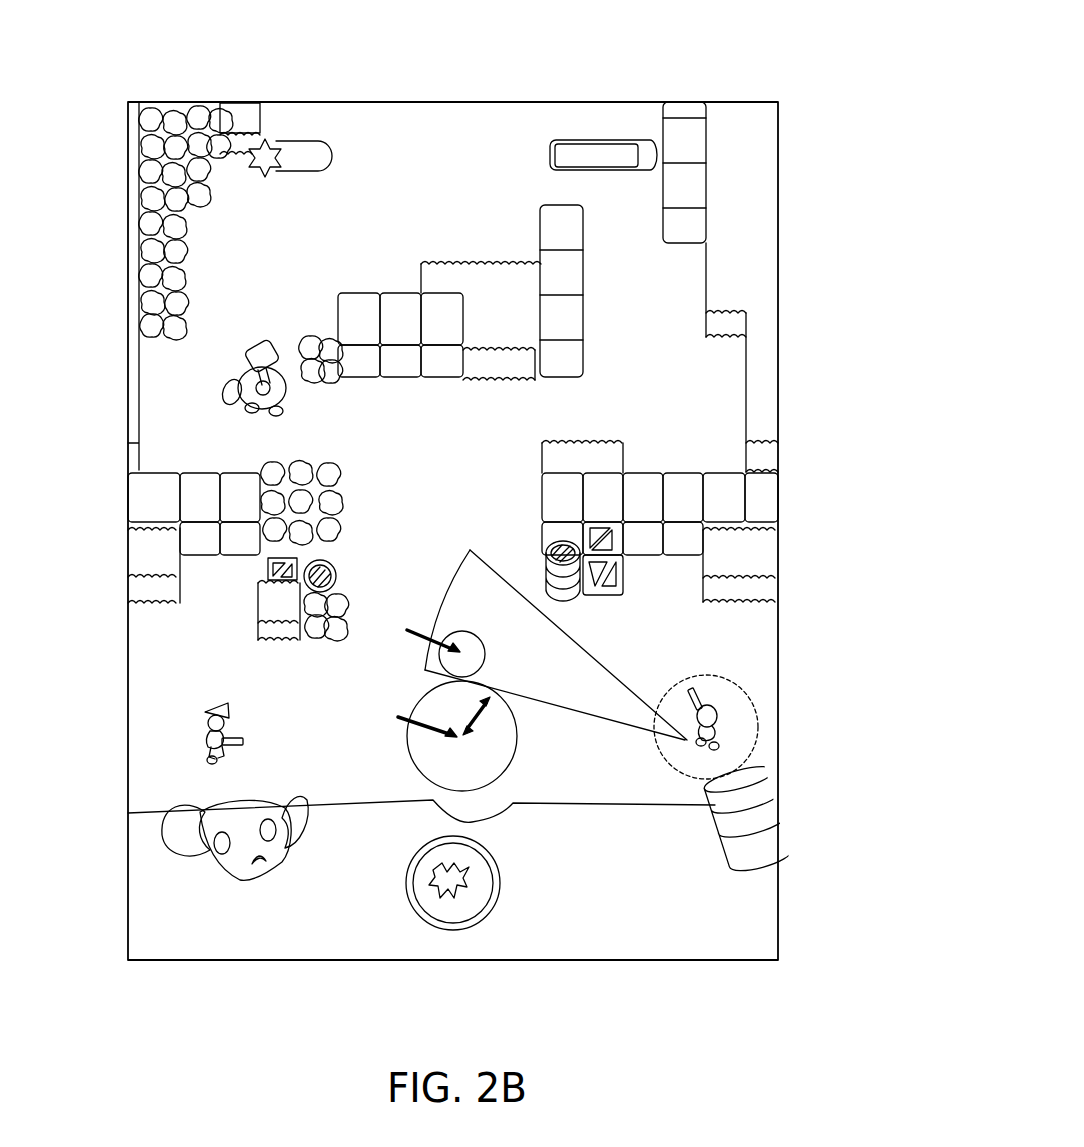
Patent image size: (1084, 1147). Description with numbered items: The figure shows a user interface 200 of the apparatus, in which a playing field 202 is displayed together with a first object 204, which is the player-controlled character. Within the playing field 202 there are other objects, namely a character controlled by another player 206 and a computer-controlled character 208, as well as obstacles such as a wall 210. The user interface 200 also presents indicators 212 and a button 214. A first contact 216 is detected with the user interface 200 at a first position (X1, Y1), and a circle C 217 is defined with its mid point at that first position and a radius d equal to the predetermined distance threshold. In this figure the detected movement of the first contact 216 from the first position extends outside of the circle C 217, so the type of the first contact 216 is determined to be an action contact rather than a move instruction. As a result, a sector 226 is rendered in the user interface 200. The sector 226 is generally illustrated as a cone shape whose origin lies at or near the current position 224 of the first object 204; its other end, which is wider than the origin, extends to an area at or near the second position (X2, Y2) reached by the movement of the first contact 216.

The user interface 200 is at (762, 72).
The playing field 202 is at (568, 748).
The first object 204 is at (721, 720).
The other object 206 is at (197, 715).
The other object 208 is at (227, 383).
The wall 210 is at (688, 501).
The indicators 212 is at (305, 140).
The button 214 is at (405, 880).
The first contact 216 is at (453, 665).
The circle C 217 is at (430, 757).
The current position 224 is at (728, 763).
The sector 226 is at (568, 658).